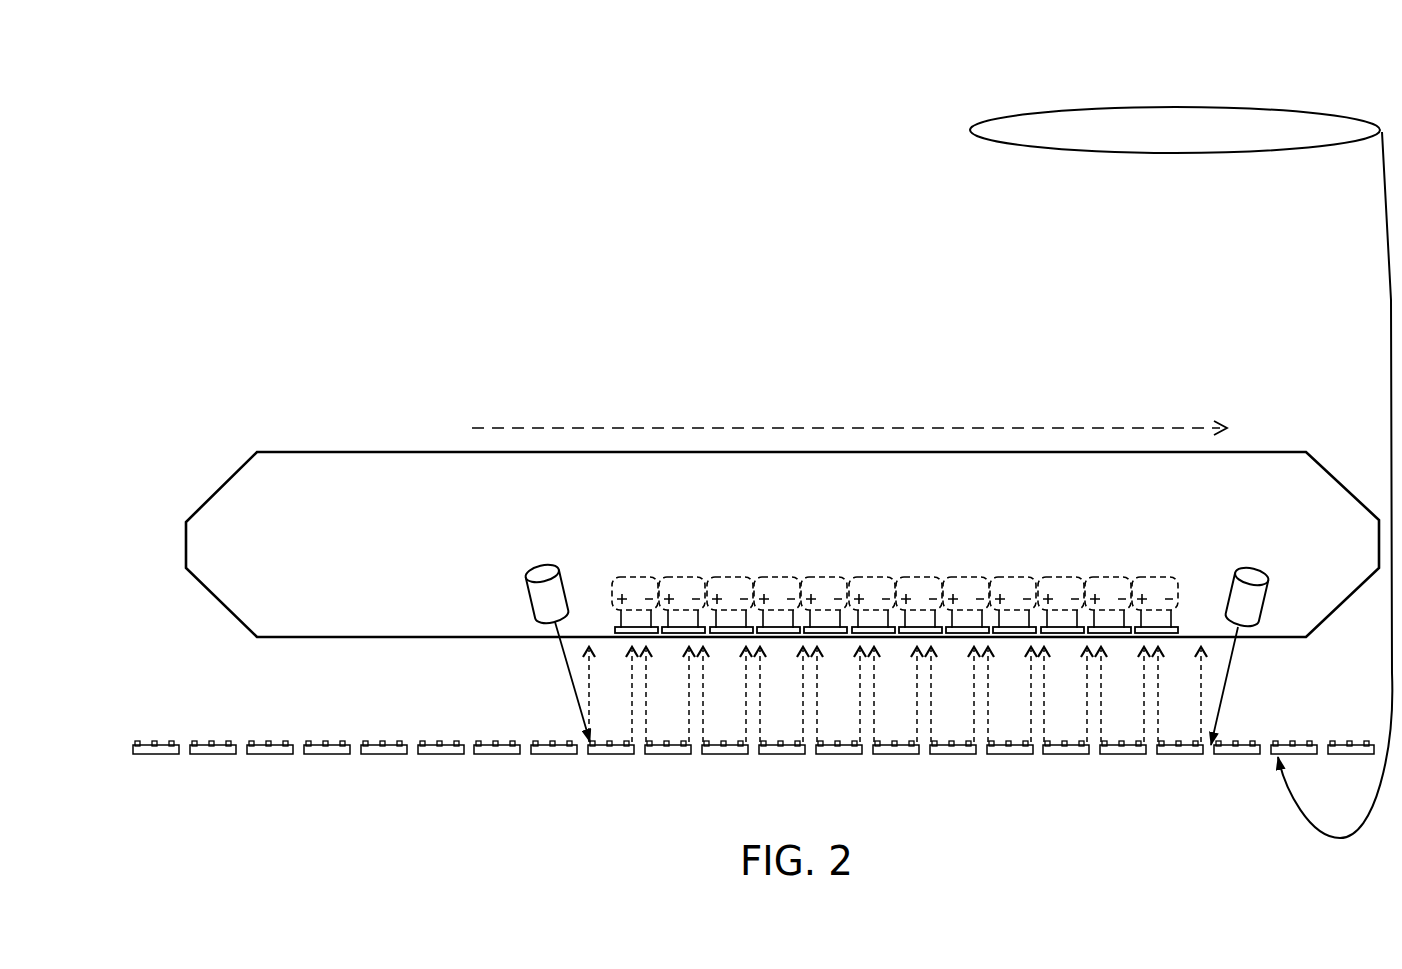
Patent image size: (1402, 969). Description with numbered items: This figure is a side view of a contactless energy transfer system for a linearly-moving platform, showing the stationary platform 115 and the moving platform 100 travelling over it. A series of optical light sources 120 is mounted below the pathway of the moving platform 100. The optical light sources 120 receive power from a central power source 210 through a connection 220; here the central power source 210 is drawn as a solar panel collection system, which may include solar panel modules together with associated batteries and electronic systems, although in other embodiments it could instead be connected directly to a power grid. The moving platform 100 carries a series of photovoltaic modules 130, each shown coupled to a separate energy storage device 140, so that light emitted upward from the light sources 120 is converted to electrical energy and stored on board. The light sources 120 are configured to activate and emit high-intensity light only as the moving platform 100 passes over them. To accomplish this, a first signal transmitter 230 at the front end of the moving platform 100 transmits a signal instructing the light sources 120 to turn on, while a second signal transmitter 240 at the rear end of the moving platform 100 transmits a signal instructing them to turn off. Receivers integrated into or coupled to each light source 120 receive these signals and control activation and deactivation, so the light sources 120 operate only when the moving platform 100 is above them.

The moving platform 100 is at (522, 495).
The stationary platform 115 is at (807, 800).
The optical light sources 120 is at (717, 758).
The photovoltaic modules 130 is at (1157, 625).
The energy storage device 140 is at (731, 578).
The central power source 210 is at (1197, 108).
The connection 220 is at (1392, 673).
The first signal transmitter 230 is at (1266, 570).
The second signal transmitter 240 is at (520, 577).